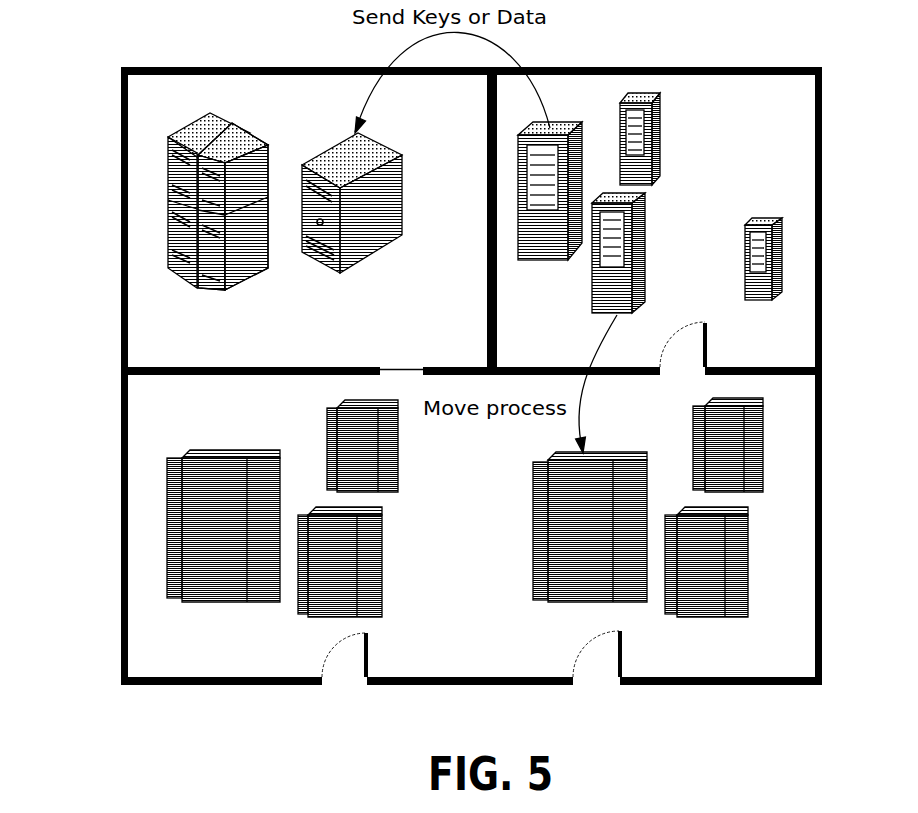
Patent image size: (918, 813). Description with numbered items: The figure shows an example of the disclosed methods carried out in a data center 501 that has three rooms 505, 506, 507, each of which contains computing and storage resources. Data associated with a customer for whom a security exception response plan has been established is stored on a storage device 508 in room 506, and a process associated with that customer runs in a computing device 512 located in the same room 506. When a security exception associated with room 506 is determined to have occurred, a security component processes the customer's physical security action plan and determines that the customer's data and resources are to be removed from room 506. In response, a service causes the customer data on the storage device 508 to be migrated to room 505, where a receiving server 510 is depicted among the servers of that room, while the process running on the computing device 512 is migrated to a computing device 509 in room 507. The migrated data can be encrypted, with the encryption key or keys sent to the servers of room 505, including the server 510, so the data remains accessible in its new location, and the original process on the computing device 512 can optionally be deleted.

The data center 501 is at (120, 270).
The room 505 is at (325, 110).
The room 506 is at (746, 112).
The room 507 is at (486, 668).
The storage device 508 is at (580, 127).
The computing device 509 is at (533, 533).
The server receiving keys or data 510 is at (404, 216).
The computing device 512 is at (650, 247).